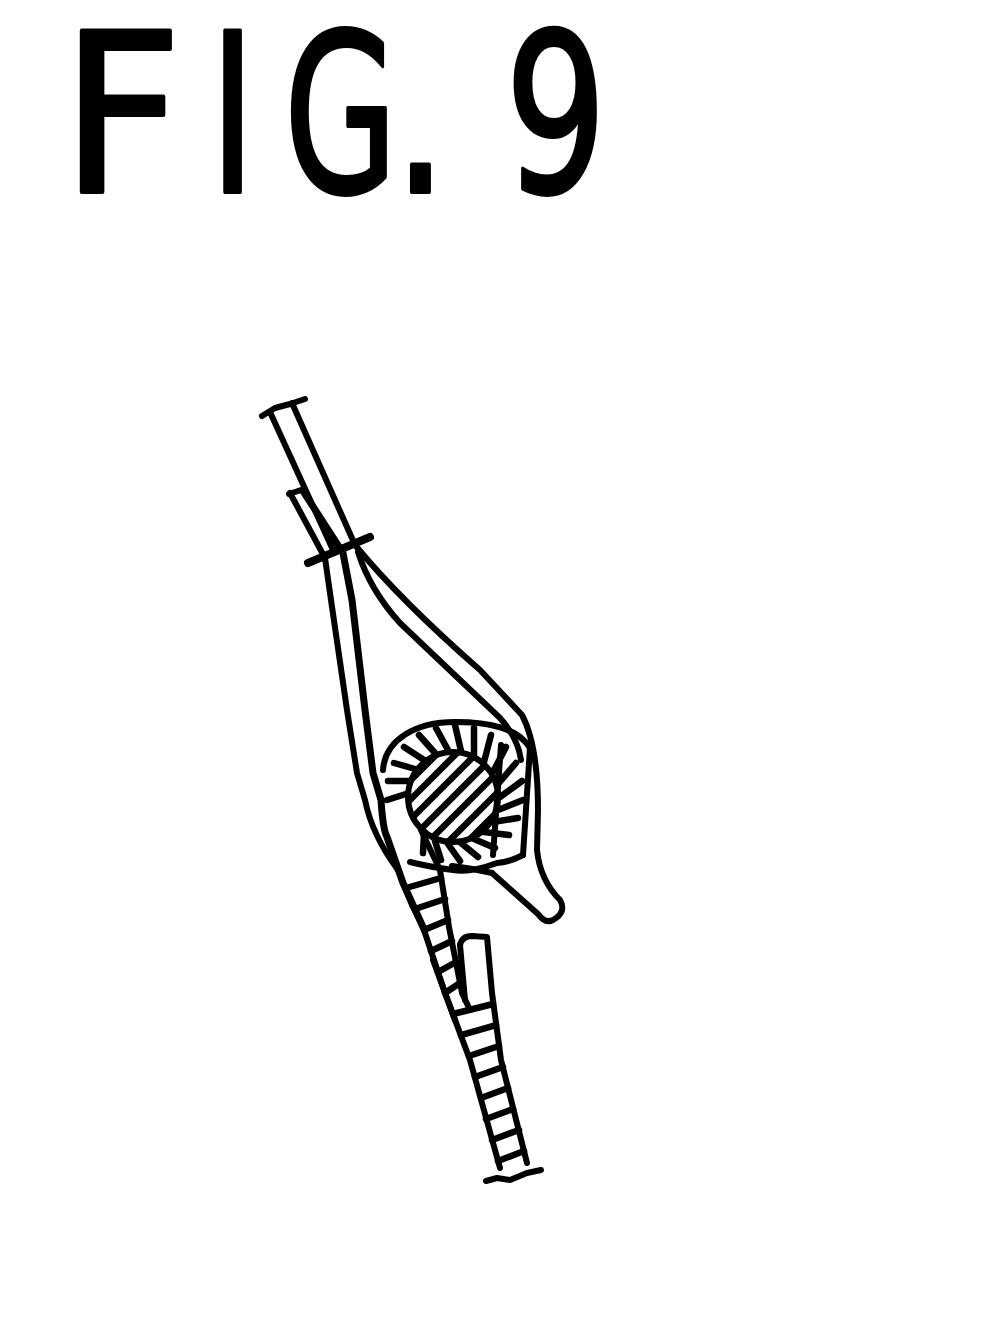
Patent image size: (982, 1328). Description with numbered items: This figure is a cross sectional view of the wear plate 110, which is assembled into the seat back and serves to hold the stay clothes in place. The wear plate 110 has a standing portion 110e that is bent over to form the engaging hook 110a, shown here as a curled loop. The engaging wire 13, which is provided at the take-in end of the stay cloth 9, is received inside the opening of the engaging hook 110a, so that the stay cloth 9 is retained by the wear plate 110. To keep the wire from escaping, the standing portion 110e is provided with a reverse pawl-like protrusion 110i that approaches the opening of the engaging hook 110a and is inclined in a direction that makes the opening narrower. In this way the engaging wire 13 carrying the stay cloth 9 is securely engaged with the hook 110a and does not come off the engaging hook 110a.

The stay cloth 9 is at (433, 623).
The engaging wire 13 is at (530, 767).
The wear plate 110 is at (530, 853).
The engaging hook 110a is at (424, 724).
The standing portion 110e is at (472, 1072).
The reverse pawl-like protrusion 110i is at (490, 976).